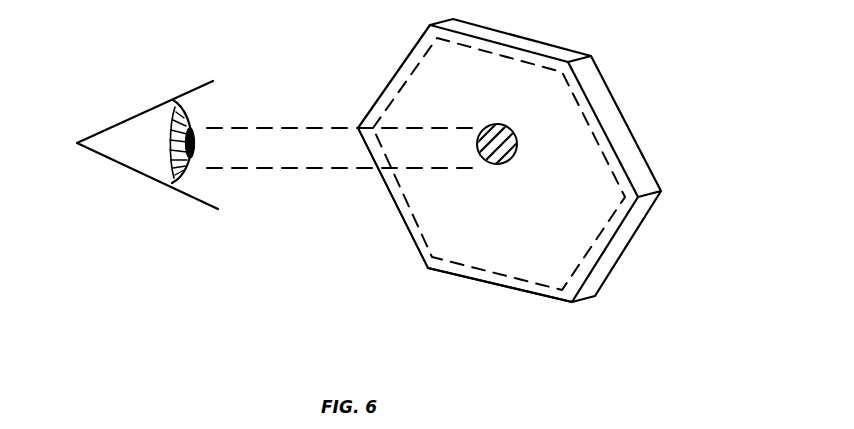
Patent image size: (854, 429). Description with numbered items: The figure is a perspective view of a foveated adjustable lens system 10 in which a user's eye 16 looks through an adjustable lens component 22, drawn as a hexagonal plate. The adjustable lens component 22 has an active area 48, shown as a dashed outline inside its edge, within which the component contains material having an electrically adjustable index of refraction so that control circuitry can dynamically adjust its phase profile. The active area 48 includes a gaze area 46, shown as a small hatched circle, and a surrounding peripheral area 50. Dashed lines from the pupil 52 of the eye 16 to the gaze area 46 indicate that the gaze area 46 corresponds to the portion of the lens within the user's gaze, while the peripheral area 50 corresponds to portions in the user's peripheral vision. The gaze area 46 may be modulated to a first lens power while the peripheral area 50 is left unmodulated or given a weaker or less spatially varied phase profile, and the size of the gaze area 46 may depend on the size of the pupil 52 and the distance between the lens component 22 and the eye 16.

The system 10 is at (80, 73).
The user's eye 16 is at (132, 116).
The pupil 52 is at (191, 130).
The adjustable lens component 22 is at (657, 172).
The gaze area 46 is at (517, 142).
The active area 48 is at (540, 283).
The peripheral area 50 is at (608, 205).